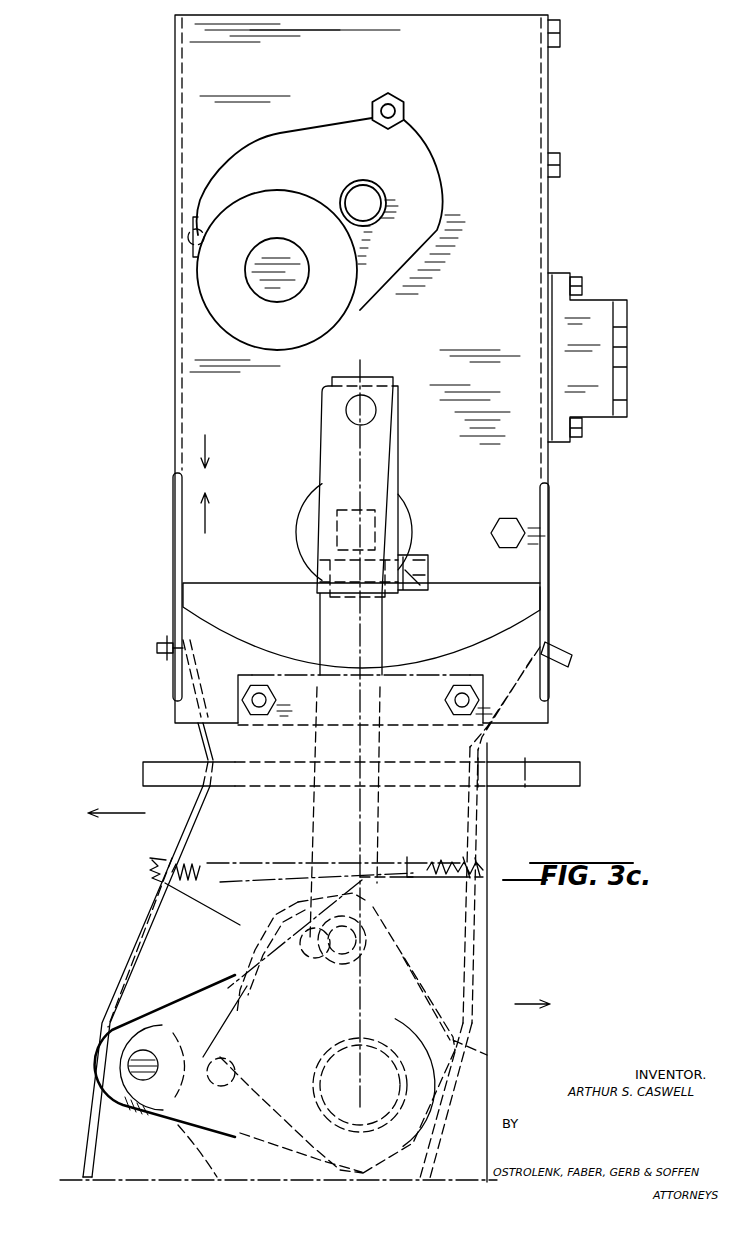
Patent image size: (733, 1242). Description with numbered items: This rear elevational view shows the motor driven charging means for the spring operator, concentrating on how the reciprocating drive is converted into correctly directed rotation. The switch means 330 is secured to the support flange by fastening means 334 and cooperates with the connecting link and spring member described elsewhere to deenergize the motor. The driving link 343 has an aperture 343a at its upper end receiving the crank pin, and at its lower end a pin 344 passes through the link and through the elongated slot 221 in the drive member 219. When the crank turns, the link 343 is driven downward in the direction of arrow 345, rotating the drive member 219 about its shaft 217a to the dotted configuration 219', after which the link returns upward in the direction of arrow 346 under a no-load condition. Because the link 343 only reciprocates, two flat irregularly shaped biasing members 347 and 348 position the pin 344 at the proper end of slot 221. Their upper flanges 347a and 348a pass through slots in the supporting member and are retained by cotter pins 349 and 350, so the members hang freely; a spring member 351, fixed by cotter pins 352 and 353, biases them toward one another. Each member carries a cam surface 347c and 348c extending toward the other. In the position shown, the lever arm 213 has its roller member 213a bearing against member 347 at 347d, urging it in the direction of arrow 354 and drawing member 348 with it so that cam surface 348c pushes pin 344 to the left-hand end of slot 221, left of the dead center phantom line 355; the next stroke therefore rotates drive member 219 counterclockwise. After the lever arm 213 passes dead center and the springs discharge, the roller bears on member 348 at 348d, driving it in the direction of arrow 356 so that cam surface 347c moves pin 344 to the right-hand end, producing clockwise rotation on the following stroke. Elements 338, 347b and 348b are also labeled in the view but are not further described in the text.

The switch means 330 is at (600, 305).
The fastening means 334 is at (582, 432).
The driving link 343 is at (378, 468).
The aperture 343a is at (377, 412).
The arrow 345 is at (205, 448).
The arrow 346 is at (205, 508).
The mounting nuts 338 is at (463, 682).
The cotter pin 349 is at (167, 638).
The biasing member 347 is at (132, 947).
The flange 347a is at (160, 648).
The link 347b is at (167, 902).
The cam surface 347c is at (268, 922).
The bearing position 347d is at (92, 1062).
The cotter pin 350 is at (560, 643).
The biasing member 348 is at (473, 933).
The flange 348a is at (573, 658).
The bracket 348b is at (412, 875).
The cam surface 348c is at (313, 865).
The bearing position 348d is at (467, 1065).
The spring member 351 is at (175, 875).
The cotter pin 352 is at (155, 868).
The cotter pin 353 is at (472, 848).
The arrow 354 is at (123, 813).
The phantom line 355 is at (363, 1018).
The arrow 356 is at (532, 1000).
The drive member 219 is at (430, 977).
The dotted configuration of drive member 219' is at (402, 998).
The elongated slot 221 is at (300, 950).
The pin 344 is at (337, 1000).
The shaft 217a is at (337, 1068).
The lever arm 213 is at (170, 1113).
The roller member 213a is at (122, 1110).